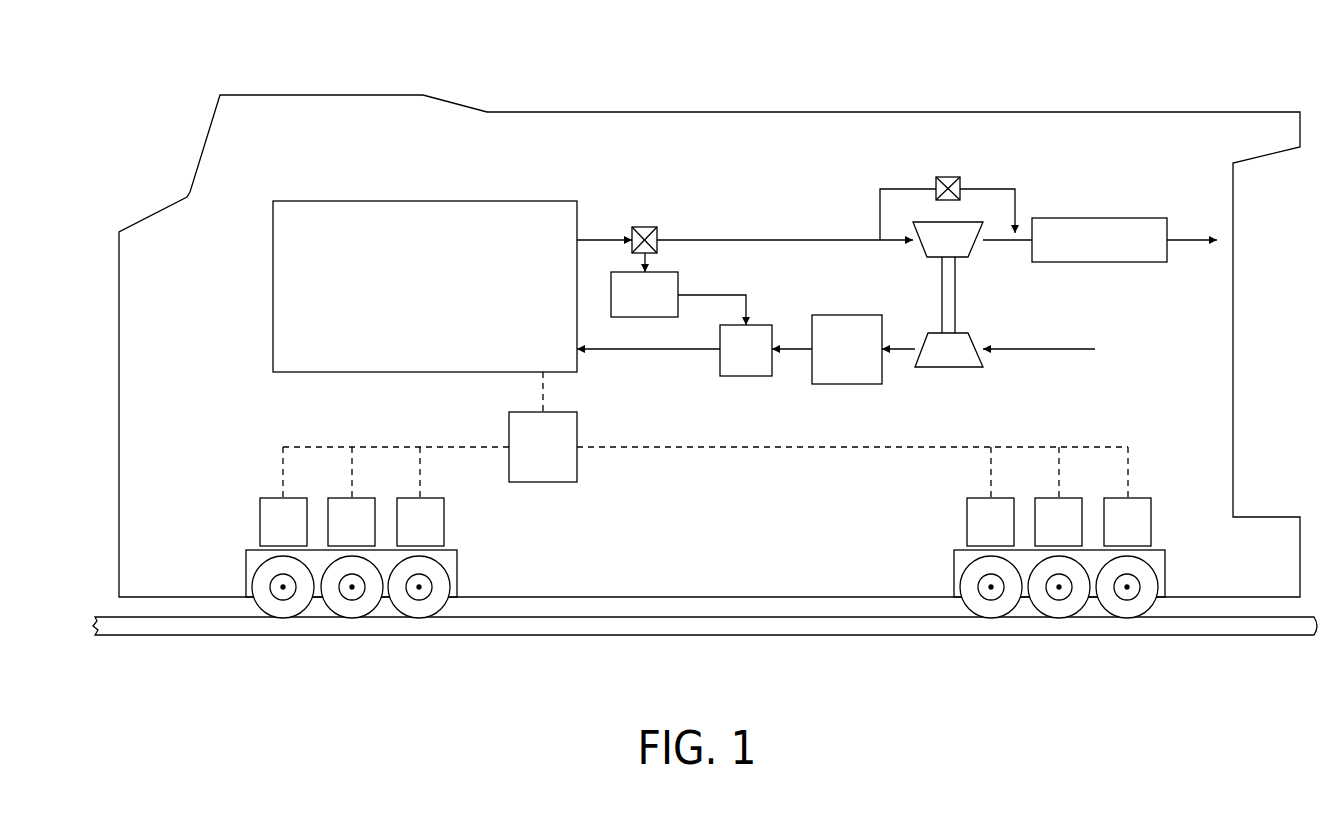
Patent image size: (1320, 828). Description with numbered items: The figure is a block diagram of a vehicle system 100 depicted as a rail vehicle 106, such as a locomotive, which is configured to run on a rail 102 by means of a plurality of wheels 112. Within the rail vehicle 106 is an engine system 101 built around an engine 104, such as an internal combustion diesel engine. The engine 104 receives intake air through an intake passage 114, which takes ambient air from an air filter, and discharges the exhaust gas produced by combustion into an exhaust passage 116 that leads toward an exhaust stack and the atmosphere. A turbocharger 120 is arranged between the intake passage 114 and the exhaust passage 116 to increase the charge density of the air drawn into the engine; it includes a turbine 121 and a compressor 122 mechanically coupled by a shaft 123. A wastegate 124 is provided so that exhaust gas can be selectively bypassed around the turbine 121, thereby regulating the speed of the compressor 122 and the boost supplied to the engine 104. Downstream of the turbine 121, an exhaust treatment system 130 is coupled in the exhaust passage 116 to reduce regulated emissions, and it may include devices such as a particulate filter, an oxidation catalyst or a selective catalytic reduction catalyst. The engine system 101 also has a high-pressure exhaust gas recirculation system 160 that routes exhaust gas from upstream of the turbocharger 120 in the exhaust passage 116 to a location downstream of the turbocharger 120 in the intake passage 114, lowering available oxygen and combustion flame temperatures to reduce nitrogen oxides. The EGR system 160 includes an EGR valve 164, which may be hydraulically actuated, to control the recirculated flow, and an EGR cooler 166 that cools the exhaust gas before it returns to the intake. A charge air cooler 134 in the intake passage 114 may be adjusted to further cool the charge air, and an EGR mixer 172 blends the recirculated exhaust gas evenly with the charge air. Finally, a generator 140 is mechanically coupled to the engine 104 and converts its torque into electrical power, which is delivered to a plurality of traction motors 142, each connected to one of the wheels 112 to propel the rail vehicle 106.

The vehicle system 100 is at (1140, 52).
The engine system 101 is at (381, 147).
The rail 102 is at (1229, 637).
The engine 104 is at (409, 309).
The rail vehicle 106 is at (990, 111).
The wheels 112 is at (445, 582).
The intake passage 114 is at (1040, 350).
The exhaust passage 116 is at (745, 238).
The turbocharger 120 is at (965, 322).
The turbine 121 is at (932, 248).
The compressor 122 is at (932, 359).
The shaft 123 is at (955, 316).
The wastegate 124 is at (948, 177).
The exhaust treatment system 130 is at (1083, 249).
The charge air cooler 134 is at (831, 359).
The generator 140 is at (527, 456).
The traction motors 142 is at (267, 531).
The exhaust gas recirculation (EGR) system 160 is at (694, 313).
The EGR valve 164 is at (651, 229).
The EGR cooler 166 is at (629, 304).
The EGR mixer 172 is at (730, 359).